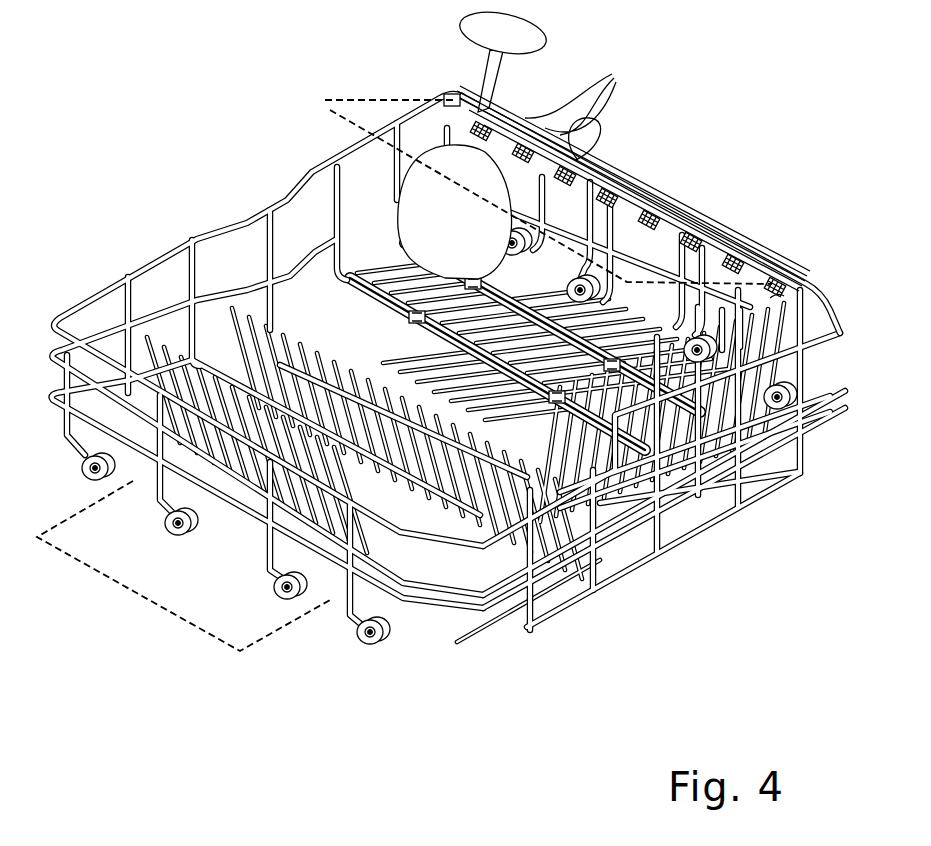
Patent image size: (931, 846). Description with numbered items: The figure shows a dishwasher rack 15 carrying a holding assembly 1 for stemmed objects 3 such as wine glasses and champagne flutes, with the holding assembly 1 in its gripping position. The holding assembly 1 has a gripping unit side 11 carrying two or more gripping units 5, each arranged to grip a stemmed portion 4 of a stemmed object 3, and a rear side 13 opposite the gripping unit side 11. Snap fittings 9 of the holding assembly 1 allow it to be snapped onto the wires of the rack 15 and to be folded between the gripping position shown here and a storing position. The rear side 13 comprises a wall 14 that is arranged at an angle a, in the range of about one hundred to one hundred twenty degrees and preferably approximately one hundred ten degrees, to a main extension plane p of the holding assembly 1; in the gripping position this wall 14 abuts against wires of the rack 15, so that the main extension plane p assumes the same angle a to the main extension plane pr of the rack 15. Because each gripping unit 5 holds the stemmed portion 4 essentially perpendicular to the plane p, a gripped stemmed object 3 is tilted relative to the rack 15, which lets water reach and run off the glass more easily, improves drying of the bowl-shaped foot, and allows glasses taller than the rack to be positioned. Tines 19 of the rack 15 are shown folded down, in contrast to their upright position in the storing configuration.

The holding assembly 1 is at (668, 59).
The stemmed object 3 is at (439, 221).
The stemmed portion 4 is at (490, 84).
The gripping units 5 is at (730, 245).
The snap fittings 9 is at (572, 107).
The gripping unit side 11 is at (450, 104).
The rear side 13 is at (641, 182).
The wall 14 is at (822, 297).
The rack 15 is at (257, 153).
The tines 19 is at (313, 310).
The angle a is at (772, 297).
The main extension plane p is at (348, 118).
The main extension plane of the rack pr is at (262, 640).